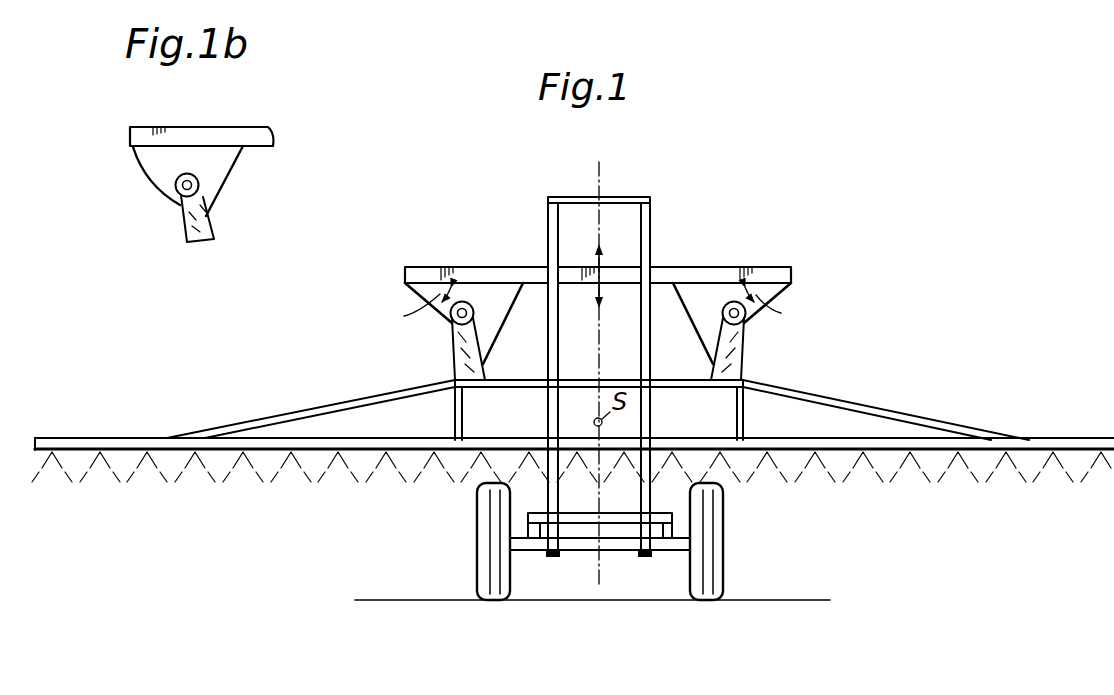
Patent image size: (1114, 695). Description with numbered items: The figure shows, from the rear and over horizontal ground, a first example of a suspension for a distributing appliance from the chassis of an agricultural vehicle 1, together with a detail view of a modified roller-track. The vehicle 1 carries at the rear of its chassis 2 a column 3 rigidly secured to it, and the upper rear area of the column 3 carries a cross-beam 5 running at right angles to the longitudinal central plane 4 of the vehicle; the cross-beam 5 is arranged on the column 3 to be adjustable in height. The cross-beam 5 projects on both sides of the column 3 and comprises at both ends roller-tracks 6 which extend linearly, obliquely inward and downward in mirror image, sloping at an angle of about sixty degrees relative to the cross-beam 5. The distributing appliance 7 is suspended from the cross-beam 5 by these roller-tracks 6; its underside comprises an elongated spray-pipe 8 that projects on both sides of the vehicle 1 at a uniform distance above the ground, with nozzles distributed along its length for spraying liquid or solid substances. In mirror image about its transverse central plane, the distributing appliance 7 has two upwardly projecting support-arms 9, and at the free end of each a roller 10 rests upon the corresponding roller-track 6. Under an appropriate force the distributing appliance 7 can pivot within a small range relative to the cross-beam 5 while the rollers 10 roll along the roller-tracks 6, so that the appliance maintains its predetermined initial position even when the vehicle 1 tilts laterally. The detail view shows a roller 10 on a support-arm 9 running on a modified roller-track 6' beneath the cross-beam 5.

In FIG. 1, the agricultural vehicle 1 is at (472, 543).
In FIG. 1, the chassis 2 is at (572, 546).
In FIG. 1, the column 3 is at (652, 241).
In FIG. 1, the longitudinal central plane 4 is at (601, 181).
In FIG. 1b, the cross-beam 5 is at (258, 136).
In FIG. 1, the cross-beam 5 is at (703, 281).
In FIG. 1, the roller-track 6 is at (589, 296).
In FIG. 1b, the modified roller-track 6' is at (169, 181).
In FIG. 1, the distributing appliance 7 is at (304, 411).
In FIG. 1, the spray-pipe 8 is at (115, 438).
In FIG. 1b, the support-arm 9 is at (188, 233).
In FIG. 1, the support-arm 9 is at (454, 362).
In FIG. 1b, the roller 10 is at (200, 183).
In FIG. 1, the roller 10 is at (477, 311).